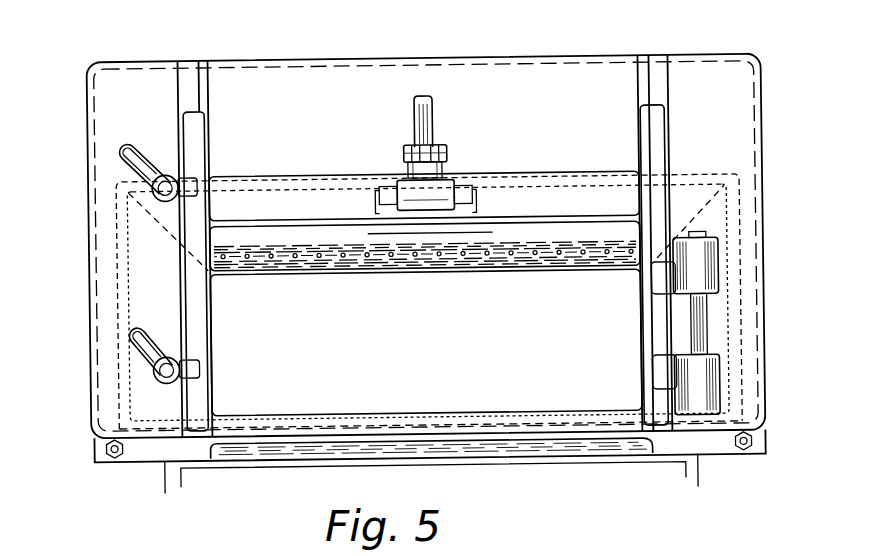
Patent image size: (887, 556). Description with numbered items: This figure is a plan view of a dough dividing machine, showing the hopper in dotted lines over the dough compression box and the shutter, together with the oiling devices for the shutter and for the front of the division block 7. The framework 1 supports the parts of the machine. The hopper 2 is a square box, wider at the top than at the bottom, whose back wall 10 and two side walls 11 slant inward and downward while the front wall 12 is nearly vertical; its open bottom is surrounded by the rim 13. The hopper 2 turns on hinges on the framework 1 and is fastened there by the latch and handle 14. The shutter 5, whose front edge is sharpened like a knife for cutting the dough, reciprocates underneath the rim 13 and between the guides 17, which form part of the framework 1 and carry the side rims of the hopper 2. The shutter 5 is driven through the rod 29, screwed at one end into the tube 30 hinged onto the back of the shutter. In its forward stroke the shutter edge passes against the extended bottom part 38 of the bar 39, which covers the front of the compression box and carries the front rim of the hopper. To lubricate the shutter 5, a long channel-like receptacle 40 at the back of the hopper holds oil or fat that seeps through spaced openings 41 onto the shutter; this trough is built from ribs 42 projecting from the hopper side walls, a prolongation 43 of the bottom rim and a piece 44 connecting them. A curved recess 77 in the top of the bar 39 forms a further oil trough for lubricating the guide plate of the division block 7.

The framework 1 is at (172, 59).
The hopper 2 is at (426, 342).
The shutter 5 is at (588, 172).
The division block 7 is at (297, 466).
The back wall 10 is at (224, 190).
The side walls 11 is at (123, 403).
The front wall 12 is at (408, 420).
The rim 13 is at (192, 290).
The latch and handle 14 is at (126, 146).
The guides 17 is at (212, 84).
The rod 29 is at (427, 96).
The tube 30 is at (446, 147).
The extended bottom part 38 is at (506, 421).
The bar 39 is at (712, 444).
The receptacle 40 is at (258, 235).
The openings 41 is at (368, 254).
The ribs 42 is at (206, 239).
The prolongation 43 is at (340, 247).
The piece 44 is at (508, 221).
The recess 77 is at (559, 442).